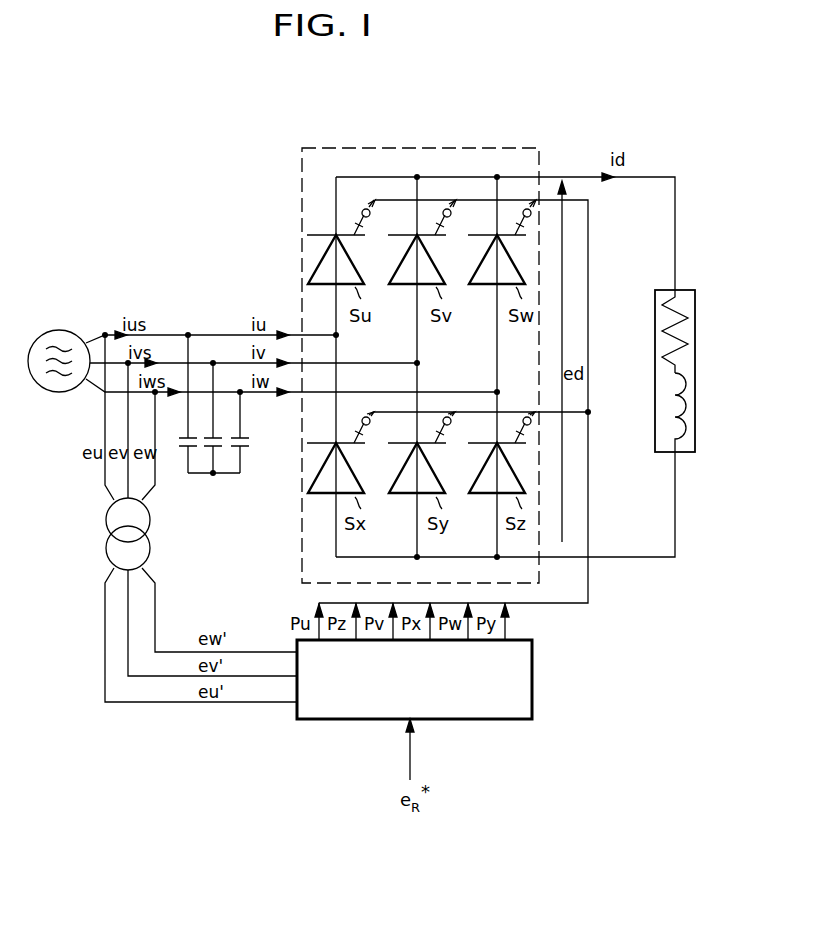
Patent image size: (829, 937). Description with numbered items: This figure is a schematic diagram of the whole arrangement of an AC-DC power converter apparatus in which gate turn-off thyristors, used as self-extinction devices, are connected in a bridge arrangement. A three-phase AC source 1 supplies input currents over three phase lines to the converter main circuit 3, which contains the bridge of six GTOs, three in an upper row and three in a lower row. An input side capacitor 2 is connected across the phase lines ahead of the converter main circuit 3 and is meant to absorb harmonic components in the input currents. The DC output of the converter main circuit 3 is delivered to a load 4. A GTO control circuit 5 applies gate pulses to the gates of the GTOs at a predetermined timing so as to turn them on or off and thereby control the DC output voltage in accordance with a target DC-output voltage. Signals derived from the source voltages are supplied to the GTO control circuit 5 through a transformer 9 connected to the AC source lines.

The three-phase AC source 1 is at (57, 328).
The input side capacitor 2 is at (247, 449).
The converter main circuit 3 is at (453, 148).
The load 4 is at (688, 296).
The GTO control circuit 5 is at (533, 680).
The transformer 9 is at (105, 528).